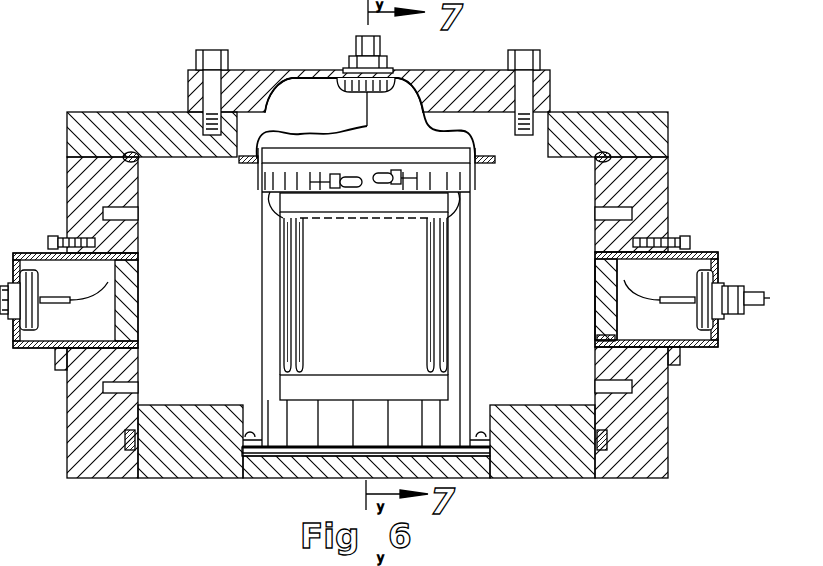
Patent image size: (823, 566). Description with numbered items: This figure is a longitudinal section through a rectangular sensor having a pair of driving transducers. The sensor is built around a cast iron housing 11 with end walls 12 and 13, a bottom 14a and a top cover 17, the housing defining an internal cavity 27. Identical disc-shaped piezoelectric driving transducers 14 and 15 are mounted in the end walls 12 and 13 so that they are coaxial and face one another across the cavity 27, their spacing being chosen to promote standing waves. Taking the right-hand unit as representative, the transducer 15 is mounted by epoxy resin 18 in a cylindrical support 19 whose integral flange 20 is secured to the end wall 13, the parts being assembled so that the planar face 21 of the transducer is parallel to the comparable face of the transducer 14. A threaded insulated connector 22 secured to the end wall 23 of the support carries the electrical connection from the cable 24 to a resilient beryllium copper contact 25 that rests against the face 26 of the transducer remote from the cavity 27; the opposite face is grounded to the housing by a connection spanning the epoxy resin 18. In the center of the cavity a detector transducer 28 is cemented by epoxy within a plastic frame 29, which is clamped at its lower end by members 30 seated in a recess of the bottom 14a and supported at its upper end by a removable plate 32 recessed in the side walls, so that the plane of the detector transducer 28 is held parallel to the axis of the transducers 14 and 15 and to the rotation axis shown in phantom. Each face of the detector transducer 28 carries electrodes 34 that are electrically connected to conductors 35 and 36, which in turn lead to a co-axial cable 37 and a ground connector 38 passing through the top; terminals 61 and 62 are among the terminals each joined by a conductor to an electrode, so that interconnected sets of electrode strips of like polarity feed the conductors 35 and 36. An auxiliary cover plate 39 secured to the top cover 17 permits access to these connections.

The housing 11 is at (682, 175).
The end wall 12 is at (66, 160).
The end wall 13 is at (668, 158).
The piezoelectric transducer 14 is at (140, 293).
The bottom 14a is at (221, 480).
The piezoelectric transducer 15 is at (600, 285).
The top cover 17 is at (607, 112).
The epoxy resin 18 is at (600, 343).
The cylindrical support 19 is at (701, 349).
The flange 20 is at (673, 366).
The planar face 21 is at (596, 322).
The threaded insulated connector 22 is at (719, 286).
The end wall of the support 23 is at (713, 332).
The cable 24 is at (744, 303).
The resilient beryllium copper contact 25 is at (651, 303).
The face of the transducer 26 is at (618, 322).
The cavity 27 is at (542, 263).
The detector transducer 28 is at (376, 277).
The plastic frame 29 is at (475, 347).
The members 30 is at (483, 450).
The removable plate 32 is at (248, 163).
The electrodes 34 is at (312, 342).
The conductor 35 is at (290, 130).
The conductor 36 is at (455, 130).
The co-axial cable 37 is at (354, 44).
The ground connector 38 is at (398, 82).
The auxiliary cover plate 39 is at (547, 84).
The terminal 61 is at (332, 176).
The terminal 62 is at (403, 167).